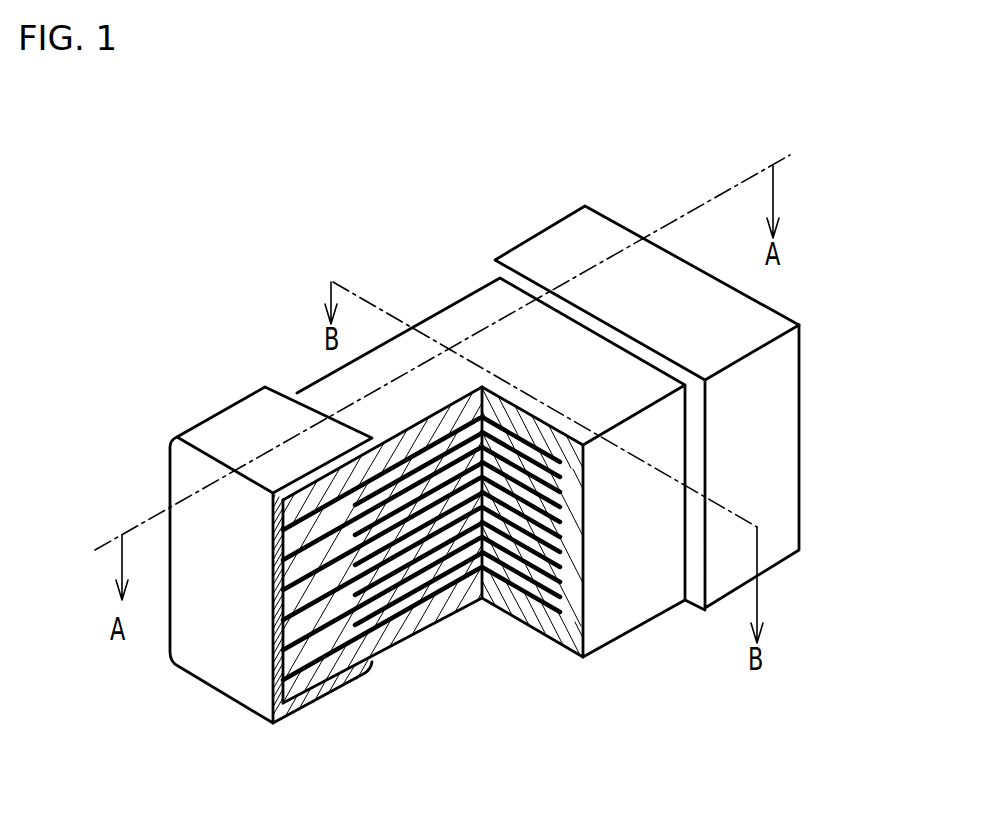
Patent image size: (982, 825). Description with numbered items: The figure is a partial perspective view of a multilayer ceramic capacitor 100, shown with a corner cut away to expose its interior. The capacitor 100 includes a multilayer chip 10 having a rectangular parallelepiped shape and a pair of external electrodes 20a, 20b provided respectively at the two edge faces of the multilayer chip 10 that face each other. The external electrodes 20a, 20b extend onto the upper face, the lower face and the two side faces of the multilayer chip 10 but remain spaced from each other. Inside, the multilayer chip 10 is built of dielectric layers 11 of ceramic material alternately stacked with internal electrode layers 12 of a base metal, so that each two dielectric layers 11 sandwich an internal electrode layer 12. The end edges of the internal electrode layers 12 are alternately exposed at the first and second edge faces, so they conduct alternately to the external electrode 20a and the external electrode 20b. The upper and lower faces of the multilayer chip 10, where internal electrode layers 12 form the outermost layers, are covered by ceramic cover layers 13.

The multilayer ceramic capacitor 100 is at (908, 137).
The multilayer chip 10 is at (315, 382).
The dielectric layer 11 is at (400, 608).
The internal electrode layer 12 is at (378, 657).
The cover layer 13 is at (455, 330).
The external electrode 20a is at (202, 422).
The external electrode 20b is at (544, 252).